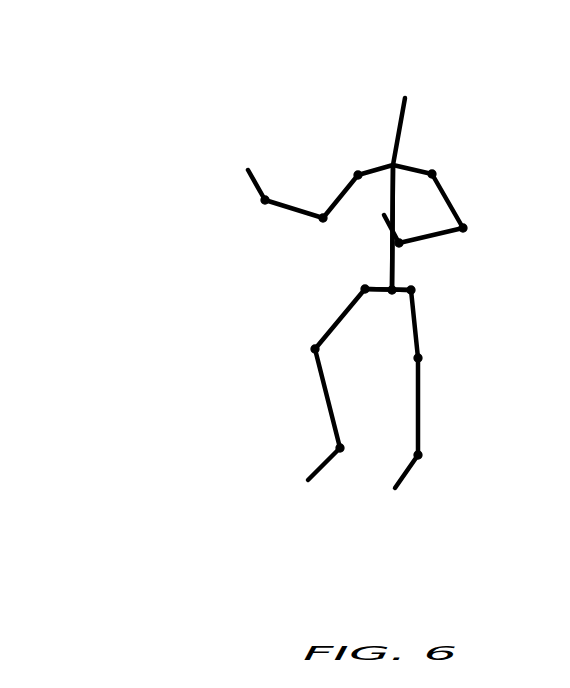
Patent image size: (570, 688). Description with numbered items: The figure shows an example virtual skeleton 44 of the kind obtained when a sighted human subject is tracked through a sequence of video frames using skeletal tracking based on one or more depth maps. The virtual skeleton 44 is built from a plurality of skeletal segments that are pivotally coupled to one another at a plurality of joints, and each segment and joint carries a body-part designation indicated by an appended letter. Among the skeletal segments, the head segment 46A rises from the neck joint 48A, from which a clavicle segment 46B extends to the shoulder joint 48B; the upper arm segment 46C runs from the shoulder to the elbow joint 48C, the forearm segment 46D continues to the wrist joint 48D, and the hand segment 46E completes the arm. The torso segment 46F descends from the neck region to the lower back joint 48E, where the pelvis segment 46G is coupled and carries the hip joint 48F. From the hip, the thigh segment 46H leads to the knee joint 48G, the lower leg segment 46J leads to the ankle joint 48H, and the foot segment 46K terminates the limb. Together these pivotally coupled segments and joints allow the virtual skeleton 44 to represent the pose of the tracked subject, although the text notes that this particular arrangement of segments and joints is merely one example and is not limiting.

The virtual skeleton 44 is at (365, 297).
The head skeletal segment 46A is at (421, 84).
The clavicle skeletal segment 46B is at (411, 160).
The upper arm skeletal segment 46C is at (345, 190).
The forearm skeletal segment 46D is at (436, 236).
The hand skeletal segment 46E is at (250, 178).
The torso skeletal segment 46F is at (390, 260).
The pelvis skeletal segment 46G is at (381, 292).
The thigh skeletal segment 46H is at (337, 318).
The lower leg skeletal segment 46J is at (419, 408).
The foot skeletal segment 46K is at (320, 467).
The neck joint 48A is at (389, 164).
The shoulder joint 48B is at (434, 175).
The elbow joint 48C is at (322, 221).
The wrist joint 48D is at (402, 242).
The lower back joint 48E is at (400, 286).
The hip joint 48F is at (412, 293).
The knee joint 48G is at (421, 357).
The ankle joint 48H is at (413, 455).